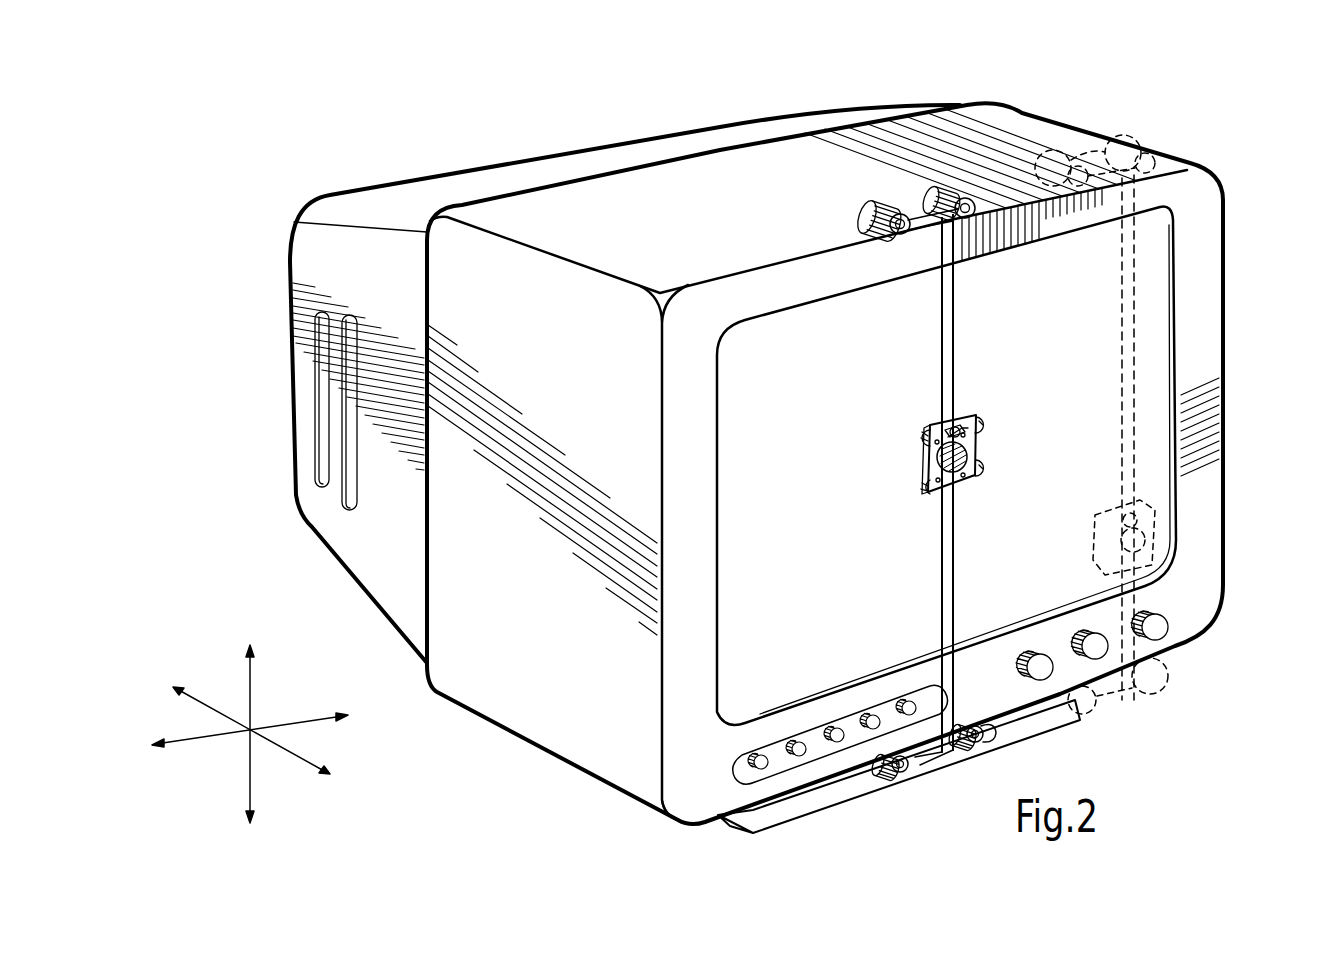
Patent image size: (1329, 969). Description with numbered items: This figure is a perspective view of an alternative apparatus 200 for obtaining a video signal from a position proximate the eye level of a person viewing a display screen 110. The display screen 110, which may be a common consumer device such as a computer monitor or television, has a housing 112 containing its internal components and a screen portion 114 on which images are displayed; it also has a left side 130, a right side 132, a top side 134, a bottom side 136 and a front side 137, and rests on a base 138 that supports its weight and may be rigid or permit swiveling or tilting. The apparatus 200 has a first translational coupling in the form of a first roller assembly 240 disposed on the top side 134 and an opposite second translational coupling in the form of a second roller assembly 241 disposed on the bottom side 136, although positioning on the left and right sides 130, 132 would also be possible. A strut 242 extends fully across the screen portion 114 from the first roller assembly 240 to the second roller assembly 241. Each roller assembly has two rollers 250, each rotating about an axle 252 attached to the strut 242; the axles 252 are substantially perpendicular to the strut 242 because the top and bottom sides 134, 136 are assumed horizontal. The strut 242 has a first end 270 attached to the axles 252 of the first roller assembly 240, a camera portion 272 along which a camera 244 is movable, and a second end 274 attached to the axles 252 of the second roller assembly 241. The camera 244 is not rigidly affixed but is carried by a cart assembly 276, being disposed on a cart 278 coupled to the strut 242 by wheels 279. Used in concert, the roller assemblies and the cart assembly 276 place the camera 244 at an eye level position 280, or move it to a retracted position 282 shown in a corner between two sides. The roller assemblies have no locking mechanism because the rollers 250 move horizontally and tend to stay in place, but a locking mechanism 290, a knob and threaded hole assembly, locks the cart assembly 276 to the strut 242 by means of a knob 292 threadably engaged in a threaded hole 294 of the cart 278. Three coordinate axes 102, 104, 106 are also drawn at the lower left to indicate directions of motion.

The apparatus 200 is at (1073, 63).
The display screen 110 is at (1062, 110).
The housing 112 is at (1067, 124).
The left side 130 is at (627, 790).
The right side 132 is at (1227, 527).
The top side 134 is at (706, 214).
The screen portion 114 is at (805, 318).
The front side 137 is at (715, 800).
The base 138 is at (815, 800).
The first roller assembly 240 is at (970, 497).
The second roller assembly 241 is at (966, 762).
The strut 242 is at (957, 350).
The roller 250 is at (872, 172).
The axle 252 is at (905, 240).
The first end 270 is at (957, 240).
The camera portion 272 is at (944, 470).
The second end 274 is at (937, 670).
The cart assembly 276 is at (966, 490).
The cart 278 is at (925, 458).
The wheels 279 is at (918, 440).
The eye level position 280 is at (960, 498).
The retracted position 282 is at (1153, 494).
The locking mechanism 290 is at (962, 415).
The knob 292 is at (975, 428).
The threaded hole 294 is at (928, 432).
The camera 244 is at (968, 458).
The bottom side 136 is at (1103, 675).
The x axis 102 is at (215, 712).
The y axis 104 is at (265, 715).
The z axis 106 is at (252, 672).